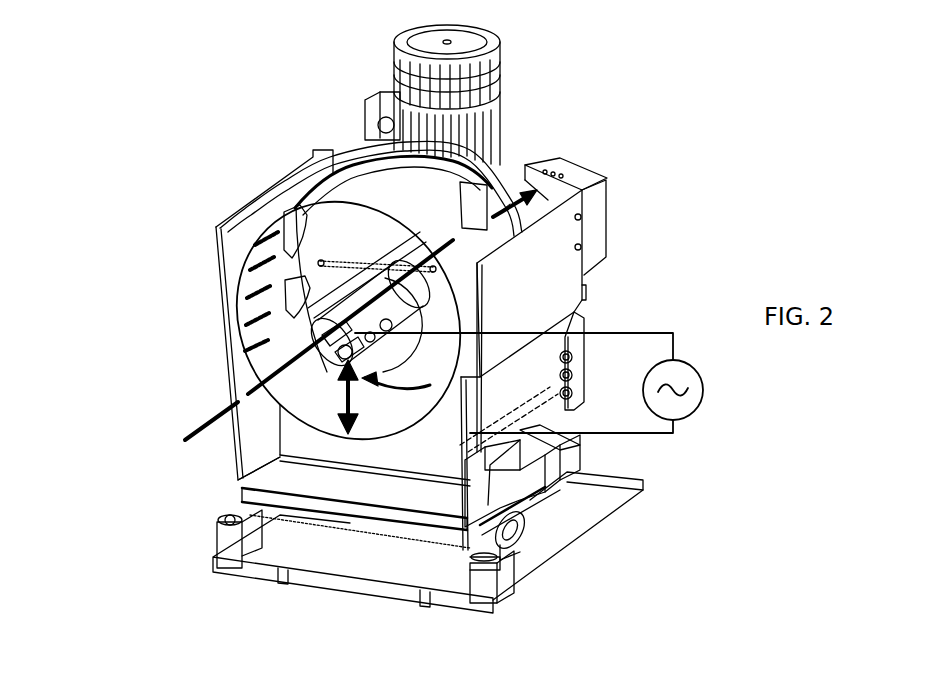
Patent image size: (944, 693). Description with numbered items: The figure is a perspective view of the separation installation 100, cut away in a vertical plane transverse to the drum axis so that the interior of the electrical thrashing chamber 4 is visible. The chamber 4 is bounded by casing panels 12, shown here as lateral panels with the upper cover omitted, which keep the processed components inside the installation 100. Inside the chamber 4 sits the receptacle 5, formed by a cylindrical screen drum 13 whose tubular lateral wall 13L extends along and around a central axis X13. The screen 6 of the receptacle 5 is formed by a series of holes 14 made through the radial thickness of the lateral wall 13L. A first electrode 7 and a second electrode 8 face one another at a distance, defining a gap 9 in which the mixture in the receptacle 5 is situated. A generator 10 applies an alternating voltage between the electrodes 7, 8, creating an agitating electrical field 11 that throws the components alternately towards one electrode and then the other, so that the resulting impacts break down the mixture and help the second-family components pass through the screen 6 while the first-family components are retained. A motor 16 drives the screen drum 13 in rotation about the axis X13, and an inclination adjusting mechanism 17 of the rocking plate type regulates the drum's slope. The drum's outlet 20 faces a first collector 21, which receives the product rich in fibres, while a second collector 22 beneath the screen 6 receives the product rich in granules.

The separation installation 100 is at (195, 167).
The electrical thrashing chamber 4 is at (276, 176).
The receptacle 5 is at (230, 265).
The screen drum 13 is at (349, 320).
The tubular lateral wall 13L is at (243, 303).
The central axis X13 is at (503, 177).
The screen 6 is at (300, 363).
The first electrode 7 is at (367, 295).
The second electrode 8 is at (315, 320).
The gap 9 is at (315, 391).
The generator 10 is at (695, 365).
The agitating electrical field 11 is at (345, 400).
The casing panels 12 is at (243, 208).
The holes 14 is at (245, 347).
The motor 16 is at (480, 82).
The inclination adjusting mechanism 17 is at (490, 543).
The outlet 20 is at (394, 414).
The first collector 21 is at (552, 460).
The second collector 22 is at (500, 500).